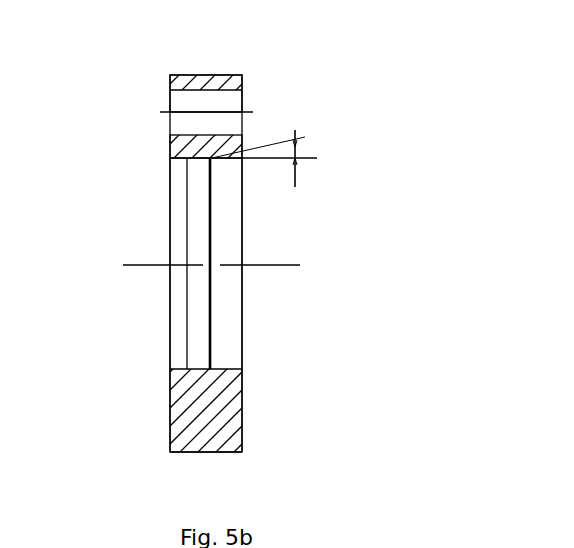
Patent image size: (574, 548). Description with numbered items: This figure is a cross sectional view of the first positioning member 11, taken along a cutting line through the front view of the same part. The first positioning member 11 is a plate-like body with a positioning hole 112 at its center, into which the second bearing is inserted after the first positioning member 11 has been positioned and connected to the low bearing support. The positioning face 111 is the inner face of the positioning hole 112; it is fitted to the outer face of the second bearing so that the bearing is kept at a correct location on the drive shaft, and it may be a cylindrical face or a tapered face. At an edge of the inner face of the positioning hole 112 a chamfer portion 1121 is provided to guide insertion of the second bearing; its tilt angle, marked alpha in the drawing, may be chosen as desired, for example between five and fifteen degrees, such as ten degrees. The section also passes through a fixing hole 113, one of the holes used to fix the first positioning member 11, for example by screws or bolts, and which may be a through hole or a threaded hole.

The first positioning member 11 is at (218, 21).
The positioning face 111 is at (214, 151).
The positioning hole 112 is at (227, 210).
The fixing hole 113 is at (182, 105).
The chamfer portion 1121 is at (214, 151).